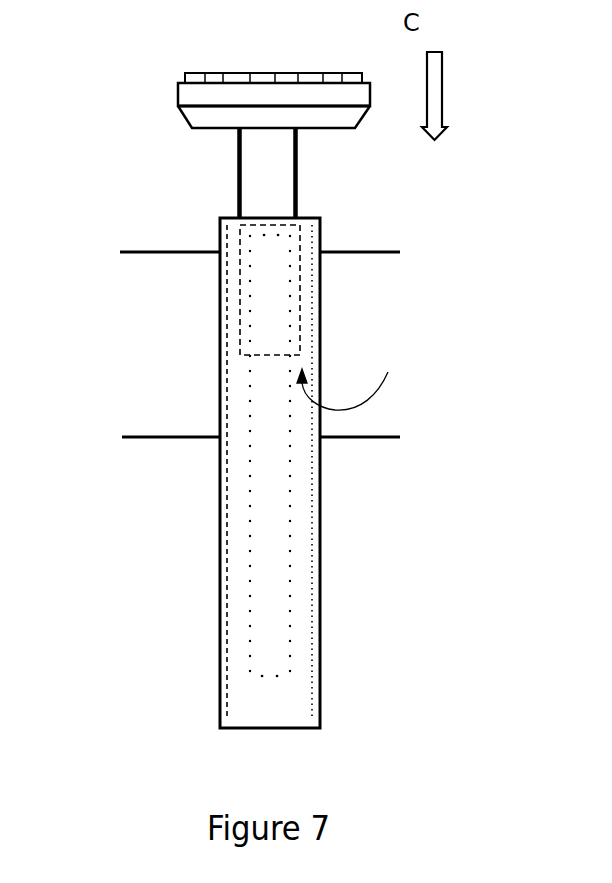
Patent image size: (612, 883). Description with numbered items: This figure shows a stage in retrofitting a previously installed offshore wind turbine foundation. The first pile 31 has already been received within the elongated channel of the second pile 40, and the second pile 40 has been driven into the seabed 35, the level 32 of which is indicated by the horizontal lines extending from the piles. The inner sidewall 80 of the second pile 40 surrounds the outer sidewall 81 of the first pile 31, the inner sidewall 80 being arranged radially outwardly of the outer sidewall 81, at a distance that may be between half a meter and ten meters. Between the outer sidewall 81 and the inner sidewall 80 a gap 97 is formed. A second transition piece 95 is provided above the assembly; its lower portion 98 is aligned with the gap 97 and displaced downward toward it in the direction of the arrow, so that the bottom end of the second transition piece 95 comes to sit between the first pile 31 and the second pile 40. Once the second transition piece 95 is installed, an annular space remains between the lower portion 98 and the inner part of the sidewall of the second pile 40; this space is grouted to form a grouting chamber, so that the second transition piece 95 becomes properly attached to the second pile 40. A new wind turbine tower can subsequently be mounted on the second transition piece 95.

The second transition piece 95 is at (213, 98).
The upper flange 32 is at (357, 252).
The seabed 35 is at (350, 438).
The lower portion of the second transition piece 98 is at (270, 358).
The gap 97 is at (353, 376).
The outer sidewall of the first pile 81 is at (250, 550).
The first pile 31 is at (273, 560).
The second pile 40 is at (220, 645).
The inner sidewall of the second pile 80 is at (310, 700).